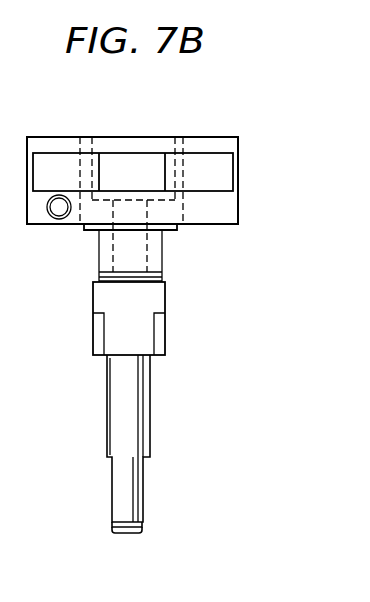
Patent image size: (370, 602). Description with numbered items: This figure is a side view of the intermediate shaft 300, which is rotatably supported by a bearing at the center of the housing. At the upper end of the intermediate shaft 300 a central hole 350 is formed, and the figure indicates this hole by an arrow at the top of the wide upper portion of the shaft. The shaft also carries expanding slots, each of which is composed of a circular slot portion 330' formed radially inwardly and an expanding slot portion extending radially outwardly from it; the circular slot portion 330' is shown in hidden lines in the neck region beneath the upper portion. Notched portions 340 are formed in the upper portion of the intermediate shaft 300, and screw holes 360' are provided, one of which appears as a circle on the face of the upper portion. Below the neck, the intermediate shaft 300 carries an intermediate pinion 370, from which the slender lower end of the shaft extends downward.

The intermediate shaft 300 is at (220, 140).
The central hole 350 is at (135, 136).
The notched portions 340 is at (220, 193).
The screw holes 360' is at (62, 231).
The circular slot portion 330' is at (158, 243).
The intermediate pinion 370 is at (158, 338).